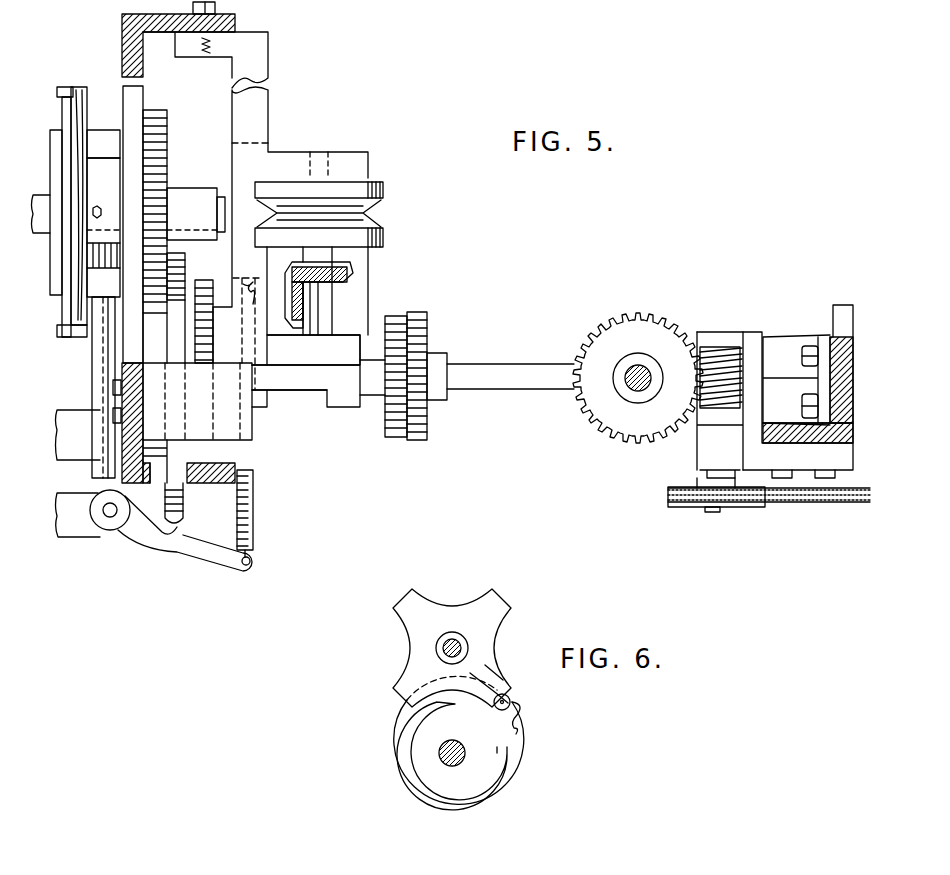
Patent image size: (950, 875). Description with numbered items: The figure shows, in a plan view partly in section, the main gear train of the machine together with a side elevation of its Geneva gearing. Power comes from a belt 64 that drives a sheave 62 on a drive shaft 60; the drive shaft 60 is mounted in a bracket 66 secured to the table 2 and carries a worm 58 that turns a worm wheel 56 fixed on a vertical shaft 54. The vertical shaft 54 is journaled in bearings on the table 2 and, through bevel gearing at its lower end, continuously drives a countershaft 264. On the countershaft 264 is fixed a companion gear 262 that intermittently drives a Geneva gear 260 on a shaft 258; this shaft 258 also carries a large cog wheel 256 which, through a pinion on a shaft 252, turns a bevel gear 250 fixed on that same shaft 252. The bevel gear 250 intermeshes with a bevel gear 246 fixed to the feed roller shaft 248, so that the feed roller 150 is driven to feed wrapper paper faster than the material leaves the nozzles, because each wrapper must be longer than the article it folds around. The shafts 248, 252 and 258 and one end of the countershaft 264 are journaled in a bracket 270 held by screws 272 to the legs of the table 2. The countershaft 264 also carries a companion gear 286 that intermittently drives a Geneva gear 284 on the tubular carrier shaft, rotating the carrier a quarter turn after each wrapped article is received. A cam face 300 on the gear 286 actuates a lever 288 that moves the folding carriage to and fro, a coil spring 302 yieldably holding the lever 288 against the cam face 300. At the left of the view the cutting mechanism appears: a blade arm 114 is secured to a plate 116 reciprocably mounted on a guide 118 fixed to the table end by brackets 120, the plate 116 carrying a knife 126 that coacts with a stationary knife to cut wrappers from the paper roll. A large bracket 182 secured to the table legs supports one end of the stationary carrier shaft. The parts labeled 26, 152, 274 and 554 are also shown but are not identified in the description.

In FIG. 5, the table 2 is at (122, 24).
In FIG. 5, the hexagonal hole 26 is at (104, 200).
In FIG. 5, the vertical shaft 54 is at (636, 364).
In FIG. 5, the worm wheel 56 is at (625, 315).
In FIG. 5, the worm 58 is at (712, 345).
In FIG. 5, the drive shaft 60 is at (716, 513).
In FIG. 5, the sheave 62 is at (707, 508).
In FIG. 5, the belt 64 is at (815, 505).
In FIG. 5, the bracket 66 is at (697, 458).
In FIG. 5, the arm 114 is at (40, 200).
In FIG. 5, the plate 116 is at (62, 113).
In FIG. 5, the guide 118 is at (64, 97).
In FIG. 5, the brackets 120 is at (104, 136).
In FIG. 5, the knife 126 is at (76, 95).
In FIG. 5, the feed roller 150 is at (386, 240).
In FIG. 5, the pulley groove 152 is at (370, 210).
In FIG. 5, the large bracket 182 is at (70, 452).
In FIG. 5, the bevel gear 246 is at (353, 276).
In FIG. 5, the feed roller shaft 248 is at (332, 298).
In FIG. 5, the bevel gear 250 is at (300, 320).
In FIG. 5, the shaft 252 is at (188, 298).
In FIG. 5, the large cog wheel 256 is at (213, 340).
In FIG. 5, the shaft 258 is at (300, 385).
In FIG. 6, the shaft 258 is at (437, 648).
In FIG. 5, the Geneva gear 260 is at (392, 420).
In FIG. 6, the Geneva gear 260 is at (453, 606).
In FIG. 5, the companion gear 262 is at (420, 440).
In FIG. 6, the companion gear 262 is at (388, 750).
In FIG. 5, the countershaft 264 is at (528, 389).
In FIG. 6, the countershaft 264 is at (440, 760).
In FIG. 5, the bracket 270 is at (268, 118).
In FIG. 5, the screws 272 is at (215, 7).
In FIG. 5, the rod 274 is at (103, 357).
In FIG. 5, the Geneva gear 284 is at (172, 115).
In FIG. 5, the companion gear 286 is at (185, 500).
In FIG. 5, the lever 288 is at (113, 527).
In FIG. 5, the cam face 300 is at (178, 523).
In FIG. 5, the coil spring 302 is at (253, 529).
In FIG. 5, the pinion 554 is at (209, 282).